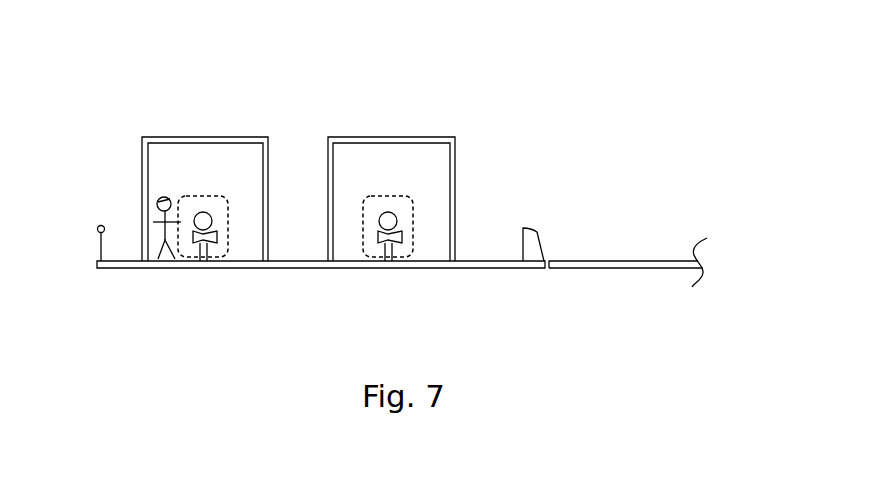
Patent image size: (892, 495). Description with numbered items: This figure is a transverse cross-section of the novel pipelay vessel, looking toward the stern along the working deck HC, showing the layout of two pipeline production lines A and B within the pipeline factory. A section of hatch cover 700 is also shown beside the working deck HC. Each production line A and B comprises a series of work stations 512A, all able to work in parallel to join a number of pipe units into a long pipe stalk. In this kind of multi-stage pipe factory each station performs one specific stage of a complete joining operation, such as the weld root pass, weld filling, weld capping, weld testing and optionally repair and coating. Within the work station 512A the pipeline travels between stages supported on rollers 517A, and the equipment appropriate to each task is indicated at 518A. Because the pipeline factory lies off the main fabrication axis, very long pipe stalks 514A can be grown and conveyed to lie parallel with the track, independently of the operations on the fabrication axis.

The production line A is at (378, 136).
The production line B is at (205, 163).
The work station 512A is at (415, 136).
The pipe stalk 514A is at (451, 142).
The rollers 517A is at (452, 179).
The equipment 518A is at (447, 200).
The working deck HC is at (536, 212).
The hatch cover 700 is at (651, 239).